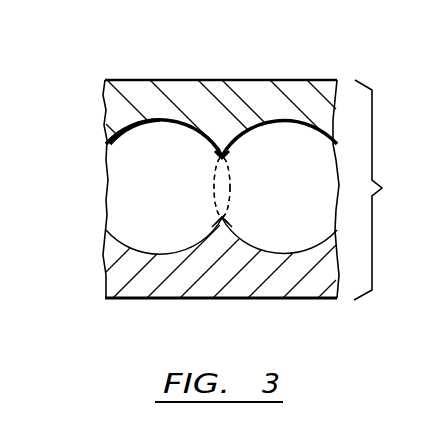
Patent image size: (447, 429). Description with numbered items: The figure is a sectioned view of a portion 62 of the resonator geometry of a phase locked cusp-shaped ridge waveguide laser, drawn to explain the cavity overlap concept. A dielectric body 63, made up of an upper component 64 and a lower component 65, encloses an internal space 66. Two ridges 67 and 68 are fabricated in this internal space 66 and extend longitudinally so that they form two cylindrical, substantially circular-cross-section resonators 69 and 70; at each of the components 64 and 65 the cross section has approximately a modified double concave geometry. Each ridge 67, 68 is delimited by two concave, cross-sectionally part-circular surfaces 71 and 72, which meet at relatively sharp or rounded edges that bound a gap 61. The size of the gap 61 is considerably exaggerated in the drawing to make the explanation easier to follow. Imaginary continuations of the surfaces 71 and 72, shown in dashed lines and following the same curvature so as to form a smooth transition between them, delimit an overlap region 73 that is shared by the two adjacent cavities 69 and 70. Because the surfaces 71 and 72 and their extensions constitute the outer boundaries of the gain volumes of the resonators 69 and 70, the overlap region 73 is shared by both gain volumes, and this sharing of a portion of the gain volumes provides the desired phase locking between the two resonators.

The gap 61 is at (200, 183).
The portion of resonator geometry 62 is at (285, 66).
The dielectric body 63 is at (383, 190).
The component 64 is at (104, 119).
The component 65 is at (104, 257).
The internal space 66 is at (144, 149).
The ridge 67 is at (223, 150).
The ridge 68 is at (222, 219).
The resonator 69 is at (163, 244).
The resonator 70 is at (292, 246).
The concave surface 71 is at (211, 146).
The concave surface 72 is at (217, 221).
The overlap region 73 is at (228, 185).